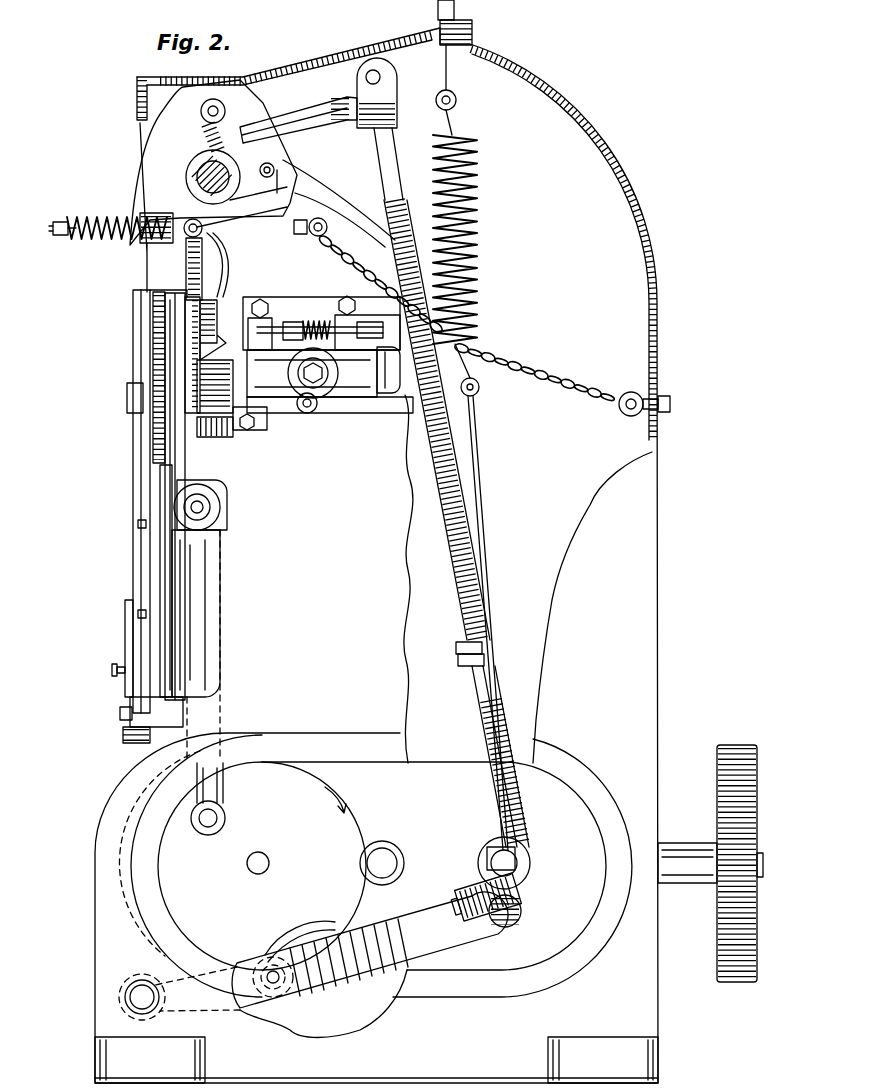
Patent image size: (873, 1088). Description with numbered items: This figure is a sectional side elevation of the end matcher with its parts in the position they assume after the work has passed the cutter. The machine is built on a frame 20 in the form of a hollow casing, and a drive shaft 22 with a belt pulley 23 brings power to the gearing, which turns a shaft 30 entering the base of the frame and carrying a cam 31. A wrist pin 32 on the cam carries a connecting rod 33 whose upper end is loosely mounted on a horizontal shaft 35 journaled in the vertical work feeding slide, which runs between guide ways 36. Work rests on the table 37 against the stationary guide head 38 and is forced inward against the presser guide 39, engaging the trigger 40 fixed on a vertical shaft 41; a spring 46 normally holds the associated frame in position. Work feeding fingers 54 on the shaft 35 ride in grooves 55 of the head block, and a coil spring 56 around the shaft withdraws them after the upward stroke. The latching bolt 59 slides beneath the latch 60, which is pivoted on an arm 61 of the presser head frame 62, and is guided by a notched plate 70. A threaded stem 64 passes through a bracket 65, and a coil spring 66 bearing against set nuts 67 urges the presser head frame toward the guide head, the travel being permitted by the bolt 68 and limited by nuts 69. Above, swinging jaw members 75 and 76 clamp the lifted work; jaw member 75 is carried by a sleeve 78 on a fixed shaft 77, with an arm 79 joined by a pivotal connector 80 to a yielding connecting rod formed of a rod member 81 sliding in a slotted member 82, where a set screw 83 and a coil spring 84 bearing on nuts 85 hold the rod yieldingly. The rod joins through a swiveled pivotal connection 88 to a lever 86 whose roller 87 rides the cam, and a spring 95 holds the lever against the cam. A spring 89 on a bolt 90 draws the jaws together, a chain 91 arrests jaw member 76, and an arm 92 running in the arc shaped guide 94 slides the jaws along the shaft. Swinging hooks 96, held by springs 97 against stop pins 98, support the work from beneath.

The frame structure 20 is at (645, 620).
The drive shaft 22 is at (678, 843).
The belt pulley 23 is at (727, 763).
The shaft 30 is at (265, 855).
The cam 31 is at (345, 803).
The wrist pin 32 is at (217, 814).
The connecting rod 33 is at (205, 627).
The horizontal shaft 35 is at (200, 507).
The guide ways 36 is at (160, 578).
The table 37 is at (212, 432).
The stationary guide head 38 is at (153, 313).
The presser guide 39 is at (217, 330).
The trigger 40 is at (183, 387).
The vertical shaft 41 is at (133, 498).
The spring 46 is at (125, 657).
The work feeding fingers 54 is at (177, 357).
The grooves 55 is at (175, 322).
The coil spring 56 is at (210, 523).
The bolt 59 is at (247, 430).
The latch 60 is at (290, 415).
The arm 61 is at (310, 392).
The presser head frame 62 is at (388, 395).
The threaded stem 64 is at (263, 328).
The bracket 65 is at (357, 333).
The coil spring 66 is at (317, 320).
The set nuts 67 is at (290, 327).
The bolt 68 is at (312, 408).
The nuts 69 is at (380, 370).
The plate 70 is at (270, 420).
The jaw member 75 is at (145, 183).
The jaw member 76 is at (277, 195).
The fixed shaft 77 is at (200, 167).
The sleeve 78 is at (187, 190).
The arm 79 is at (297, 127).
The pivotal connector 80 is at (380, 80).
The rod member 81 is at (396, 163).
The slotted member 82 is at (480, 797).
The set screw 83 is at (522, 850).
The coil spring 84 is at (460, 534).
The nuts 85 is at (483, 648).
The lever 86 is at (420, 933).
The roller 87 is at (333, 923).
The swiveled pivotal connection 88 is at (512, 902).
The spring 89 is at (100, 230).
The bolt 90 is at (53, 224).
The chain 91 is at (525, 352).
The arm 92 is at (268, 162).
The arc shaped guide 94 is at (222, 112).
The spring 95 is at (477, 247).
The swinging hook 96 is at (203, 262).
The spring 97 is at (247, 215).
The stop pin 98 is at (218, 287).